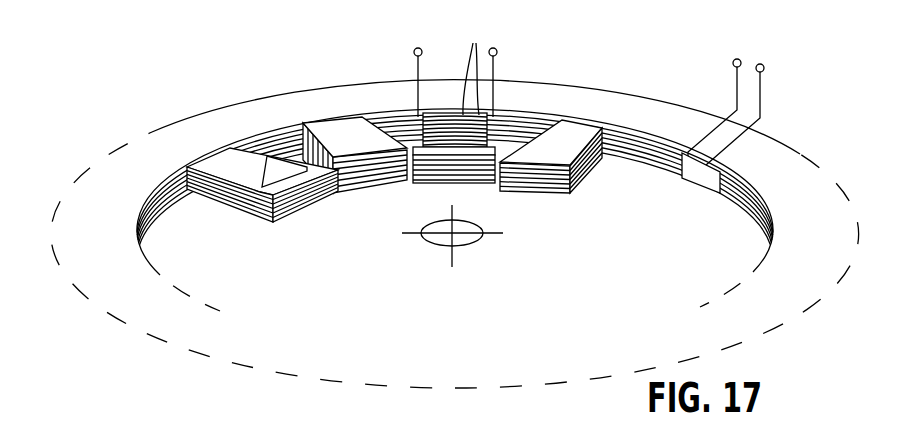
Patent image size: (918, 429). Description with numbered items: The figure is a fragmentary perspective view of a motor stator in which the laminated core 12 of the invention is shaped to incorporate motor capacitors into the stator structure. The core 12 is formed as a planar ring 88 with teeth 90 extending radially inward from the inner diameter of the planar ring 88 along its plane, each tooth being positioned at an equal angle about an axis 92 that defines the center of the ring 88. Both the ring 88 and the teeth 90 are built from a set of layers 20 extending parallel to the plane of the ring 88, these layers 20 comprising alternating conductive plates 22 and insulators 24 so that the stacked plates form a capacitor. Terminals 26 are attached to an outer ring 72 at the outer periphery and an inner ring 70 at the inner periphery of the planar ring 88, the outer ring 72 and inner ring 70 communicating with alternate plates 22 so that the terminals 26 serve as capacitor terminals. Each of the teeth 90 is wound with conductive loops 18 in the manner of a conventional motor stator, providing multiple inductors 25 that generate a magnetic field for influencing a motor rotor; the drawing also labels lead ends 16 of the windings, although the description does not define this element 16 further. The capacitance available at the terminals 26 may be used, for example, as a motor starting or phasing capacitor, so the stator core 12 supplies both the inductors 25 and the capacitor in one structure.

The core 12 is at (455, 215).
The planar ring 88 is at (210, 101).
The outer ring 72 is at (768, 140).
The layers 20 is at (160, 202).
The teeth 90 is at (437, 183).
The inductors 25 is at (455, 46).
The lead terminals 16 is at (415, 50).
The conductive loops 18 is at (475, 68).
The insulators 24 is at (551, 185).
The conductive plates 22 is at (573, 182).
The terminals 26 is at (740, 68).
The inner ring 70 is at (708, 185).
The axis 92 is at (452, 262).